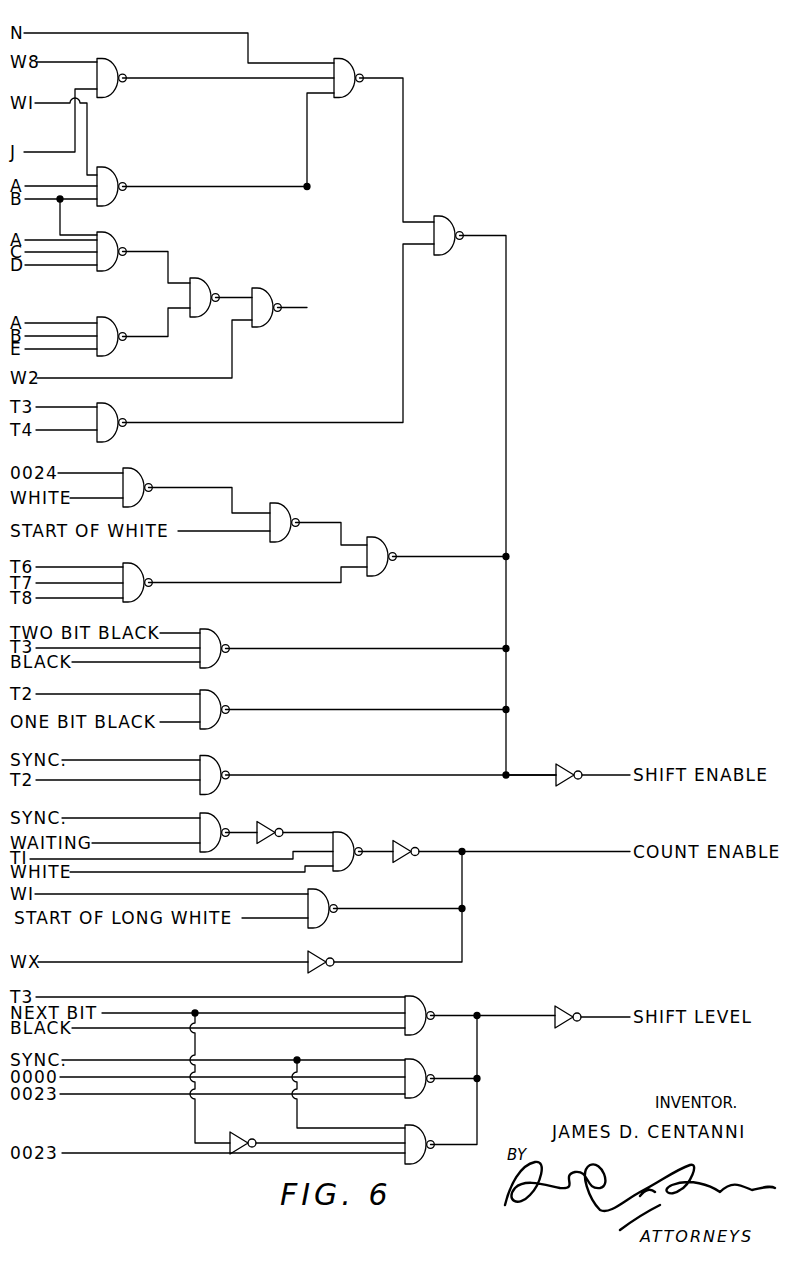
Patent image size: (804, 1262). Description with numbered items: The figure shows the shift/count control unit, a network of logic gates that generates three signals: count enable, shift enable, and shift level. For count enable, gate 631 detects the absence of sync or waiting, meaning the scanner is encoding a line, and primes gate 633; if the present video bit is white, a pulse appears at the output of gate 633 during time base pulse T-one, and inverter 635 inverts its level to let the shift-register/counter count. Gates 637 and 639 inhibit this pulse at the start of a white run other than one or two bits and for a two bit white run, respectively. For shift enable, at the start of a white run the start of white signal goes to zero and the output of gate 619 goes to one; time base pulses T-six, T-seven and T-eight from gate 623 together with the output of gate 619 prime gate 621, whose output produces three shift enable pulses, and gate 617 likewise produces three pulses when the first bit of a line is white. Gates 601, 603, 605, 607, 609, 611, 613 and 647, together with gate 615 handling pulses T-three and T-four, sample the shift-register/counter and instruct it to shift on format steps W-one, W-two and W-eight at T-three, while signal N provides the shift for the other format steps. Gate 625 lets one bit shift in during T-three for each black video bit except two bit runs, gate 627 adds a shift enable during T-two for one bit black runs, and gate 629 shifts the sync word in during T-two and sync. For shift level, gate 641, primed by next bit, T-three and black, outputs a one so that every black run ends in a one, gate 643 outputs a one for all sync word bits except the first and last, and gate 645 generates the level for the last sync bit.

The gate 601 is at (117, 168).
The gate 603 is at (115, 236).
The gate 605 is at (113, 319).
The gate 607 is at (205, 279).
The gate 609 is at (266, 320).
The gate 611 is at (352, 63).
The gate 613 is at (452, 221).
The gate 615 is at (117, 409).
The gate 617 is at (140, 471).
The gate 619 is at (287, 503).
The gate 621 is at (378, 539).
The gate 623 is at (140, 569).
The gate 625 is at (217, 631).
The gate 627 is at (217, 693).
The gate 629 is at (217, 757).
The gate 631 is at (213, 815).
The gate 633 is at (345, 832).
The inverter 635 is at (402, 843).
The gate 637 is at (328, 892).
The gate 639 is at (318, 954).
The gate 641 is at (427, 997).
The gate 643 is at (417, 1060).
The gate 645 is at (417, 1124).
The gate 647 is at (114, 62).